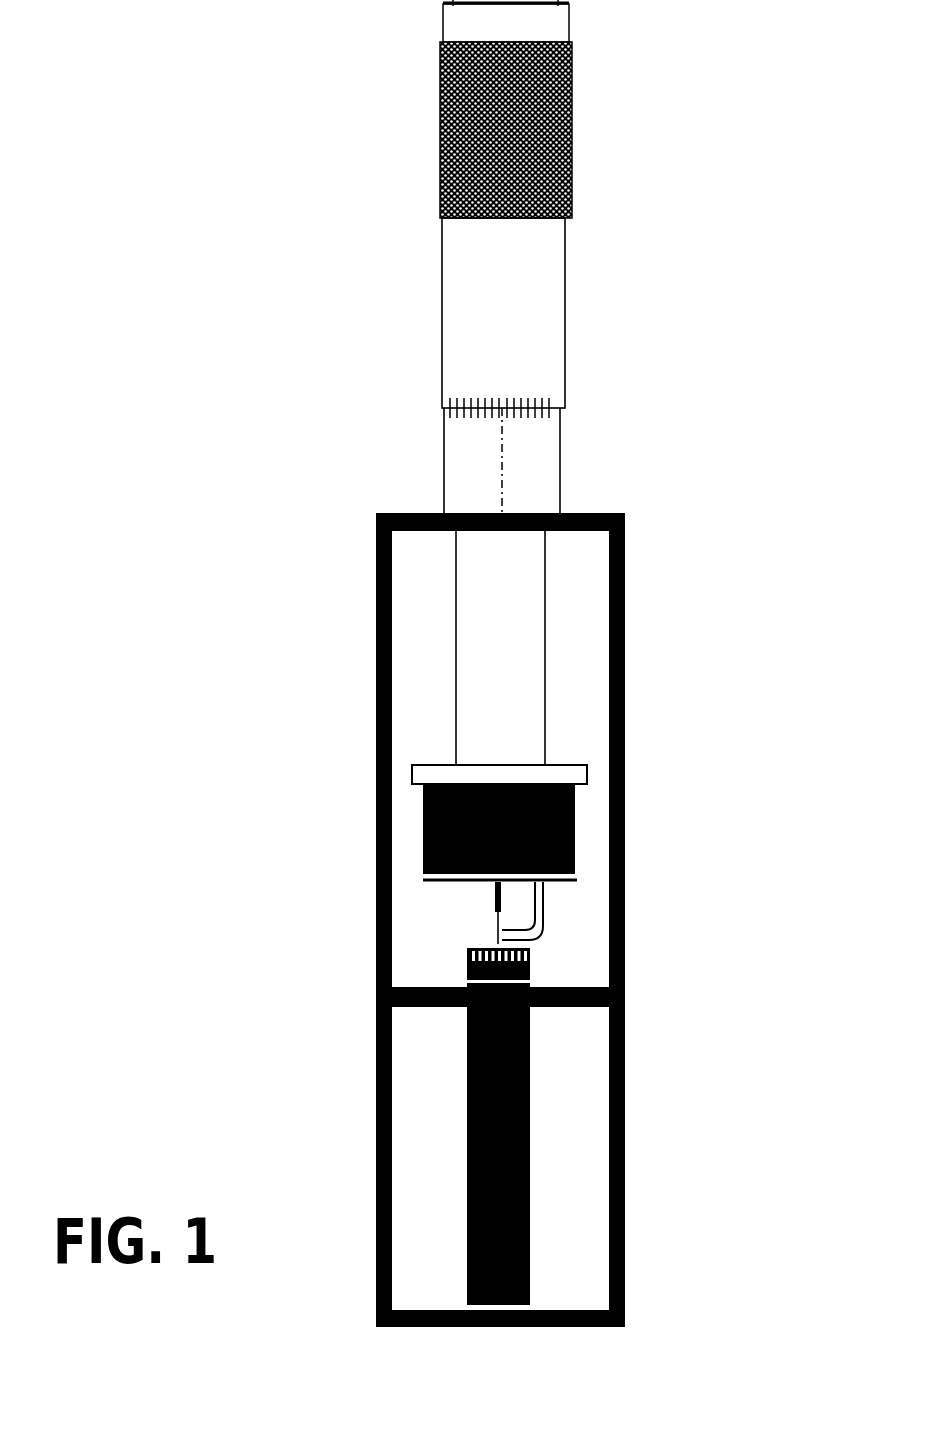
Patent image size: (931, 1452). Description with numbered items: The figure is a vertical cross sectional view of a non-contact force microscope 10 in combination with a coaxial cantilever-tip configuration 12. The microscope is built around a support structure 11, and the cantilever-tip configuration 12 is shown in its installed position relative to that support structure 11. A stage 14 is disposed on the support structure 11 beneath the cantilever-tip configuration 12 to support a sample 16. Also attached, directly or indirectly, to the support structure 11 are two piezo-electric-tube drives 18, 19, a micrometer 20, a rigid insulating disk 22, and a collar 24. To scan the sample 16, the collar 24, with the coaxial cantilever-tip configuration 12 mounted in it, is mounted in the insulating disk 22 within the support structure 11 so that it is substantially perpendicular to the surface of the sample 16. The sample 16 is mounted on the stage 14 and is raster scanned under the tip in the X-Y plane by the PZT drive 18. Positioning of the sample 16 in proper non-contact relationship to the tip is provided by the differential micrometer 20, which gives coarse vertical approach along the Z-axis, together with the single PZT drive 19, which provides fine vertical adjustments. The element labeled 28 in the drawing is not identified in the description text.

The force microscope 10 is at (322, 503).
The support structure 11 is at (376, 684).
The coaxial cantilever-tip configuration 12 is at (498, 926).
The stage 14 is at (531, 973).
The sample 16 is at (533, 957).
The piezo-electric-tube (PZT) drive 18 is at (531, 1180).
The PZT drive 19 is at (424, 835).
The differential micrometer 20 is at (561, 162).
The rigid insulating disk 22 is at (577, 880).
The collar 24 is at (495, 892).
The septum cap 28 is at (545, 934).